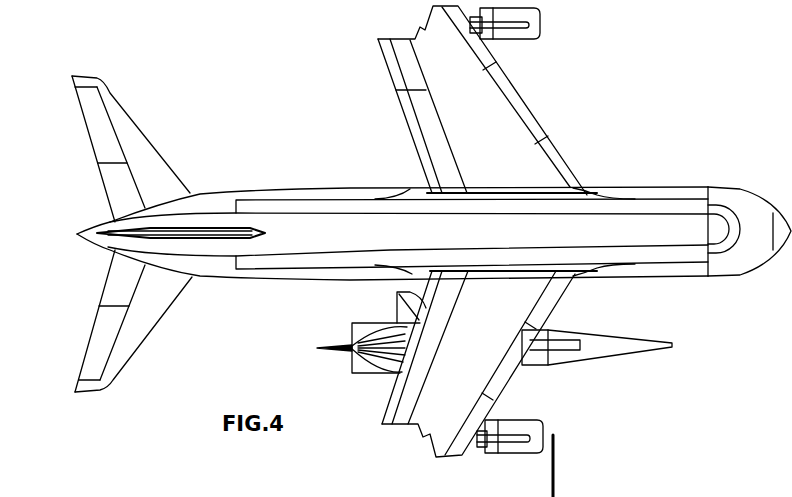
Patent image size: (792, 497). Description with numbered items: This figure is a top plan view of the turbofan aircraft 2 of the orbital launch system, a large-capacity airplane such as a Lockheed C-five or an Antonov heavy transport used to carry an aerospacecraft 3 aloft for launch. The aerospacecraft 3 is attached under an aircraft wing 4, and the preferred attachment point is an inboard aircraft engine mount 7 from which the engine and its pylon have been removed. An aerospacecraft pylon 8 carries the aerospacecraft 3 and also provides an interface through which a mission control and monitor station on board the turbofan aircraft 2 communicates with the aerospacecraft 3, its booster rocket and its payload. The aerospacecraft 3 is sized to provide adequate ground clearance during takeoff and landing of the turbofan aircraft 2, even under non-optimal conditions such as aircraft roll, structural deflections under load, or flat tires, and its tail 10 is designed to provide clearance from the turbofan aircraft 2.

The turbofan aircraft 2 is at (655, 183).
The aerospacecraft 3 is at (585, 368).
The aircraft wing 4 is at (498, 128).
The inboard aircraft engine mount 7 is at (540, 35).
The aerospacecraft pylon 8 is at (568, 332).
The tail 10 is at (345, 349).